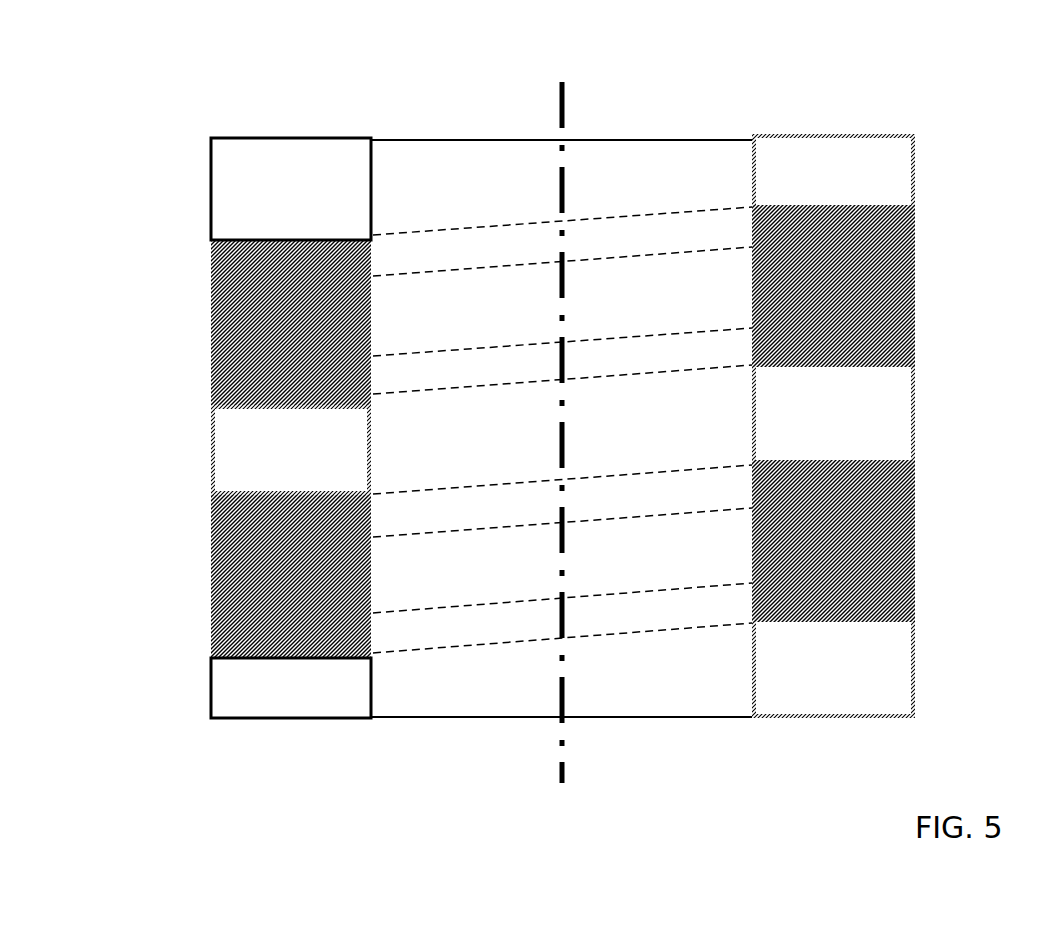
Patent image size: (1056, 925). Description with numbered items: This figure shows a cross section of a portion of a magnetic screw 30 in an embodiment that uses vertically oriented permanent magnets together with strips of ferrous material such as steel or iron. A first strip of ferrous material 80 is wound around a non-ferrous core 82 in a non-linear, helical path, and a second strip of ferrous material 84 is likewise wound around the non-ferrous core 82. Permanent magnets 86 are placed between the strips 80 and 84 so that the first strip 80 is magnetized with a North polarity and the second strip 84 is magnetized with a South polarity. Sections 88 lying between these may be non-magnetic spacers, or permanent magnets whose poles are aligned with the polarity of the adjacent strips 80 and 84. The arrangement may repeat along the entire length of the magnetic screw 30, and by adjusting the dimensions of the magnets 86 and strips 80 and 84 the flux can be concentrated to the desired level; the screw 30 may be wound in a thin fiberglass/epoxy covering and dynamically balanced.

The magnetic screw 30 is at (776, 50).
The first strip of ferrous material 80 is at (211, 240).
The non-ferrous core 82 is at (590, 140).
The second strip of ferrous material 84 is at (211, 362).
The permanent magnets 86 is at (211, 320).
The sections 88 is at (211, 160).